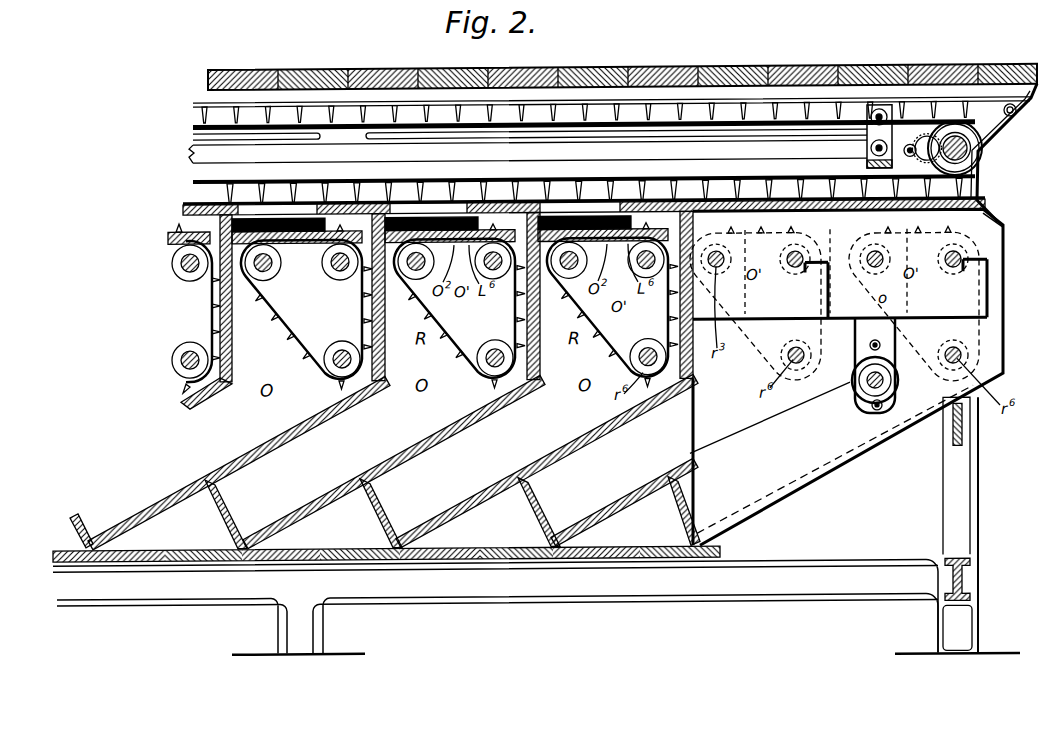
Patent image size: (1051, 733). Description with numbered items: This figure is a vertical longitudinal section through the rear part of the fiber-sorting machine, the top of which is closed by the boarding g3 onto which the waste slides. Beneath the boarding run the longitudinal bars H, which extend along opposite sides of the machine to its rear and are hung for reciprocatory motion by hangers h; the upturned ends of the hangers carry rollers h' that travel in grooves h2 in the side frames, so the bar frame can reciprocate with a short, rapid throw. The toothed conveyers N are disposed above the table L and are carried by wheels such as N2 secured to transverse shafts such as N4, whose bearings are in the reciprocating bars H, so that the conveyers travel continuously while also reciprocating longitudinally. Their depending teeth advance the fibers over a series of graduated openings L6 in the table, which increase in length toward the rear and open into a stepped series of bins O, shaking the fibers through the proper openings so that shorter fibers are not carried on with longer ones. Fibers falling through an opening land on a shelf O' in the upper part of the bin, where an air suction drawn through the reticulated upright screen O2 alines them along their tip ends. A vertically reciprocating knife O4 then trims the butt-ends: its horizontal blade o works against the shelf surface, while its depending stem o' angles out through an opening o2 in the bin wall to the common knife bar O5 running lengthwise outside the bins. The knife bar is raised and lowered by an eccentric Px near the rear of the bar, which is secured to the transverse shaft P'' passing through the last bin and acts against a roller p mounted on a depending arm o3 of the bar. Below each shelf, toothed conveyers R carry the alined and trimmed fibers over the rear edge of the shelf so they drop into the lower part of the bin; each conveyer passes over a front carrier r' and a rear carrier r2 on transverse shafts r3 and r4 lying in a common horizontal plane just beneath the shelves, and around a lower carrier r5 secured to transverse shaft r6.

The boarding g3 is at (727, 71).
The grooves h2 is at (845, 122).
The rollers h' is at (903, 104).
The hangers h is at (851, 171).
The toothed conveyers N is at (192, 132).
The bars H is at (595, 156).
The table L is at (977, 209).
The wheels N2 is at (983, 139).
The transverse shaft N4 is at (979, 165).
The bins O is at (867, 377).
The knives O4 is at (1000, 246).
The horizontal blades o is at (901, 243).
The opening o2 is at (992, 268).
The depending stem o' is at (905, 302).
The knife bar O5 is at (950, 314).
The reticulated upright screen O2 is at (297, 247).
The carrier r' is at (257, 289).
The graduated openings L6 is at (318, 247).
The carrier r2 is at (352, 281).
The lower carrier r5 is at (337, 376).
The shelves O' is at (301, 310).
The toothed conveyers R is at (314, 328).
The transverse shaft r3 is at (415, 283).
The transverse shaft r4 is at (493, 285).
The transverse shaft r6 is at (486, 370).
The transverse shaft P'' is at (889, 408).
The rollers p is at (878, 354).
The depending arms o3 is at (870, 412).
The eccentric Px is at (840, 424).